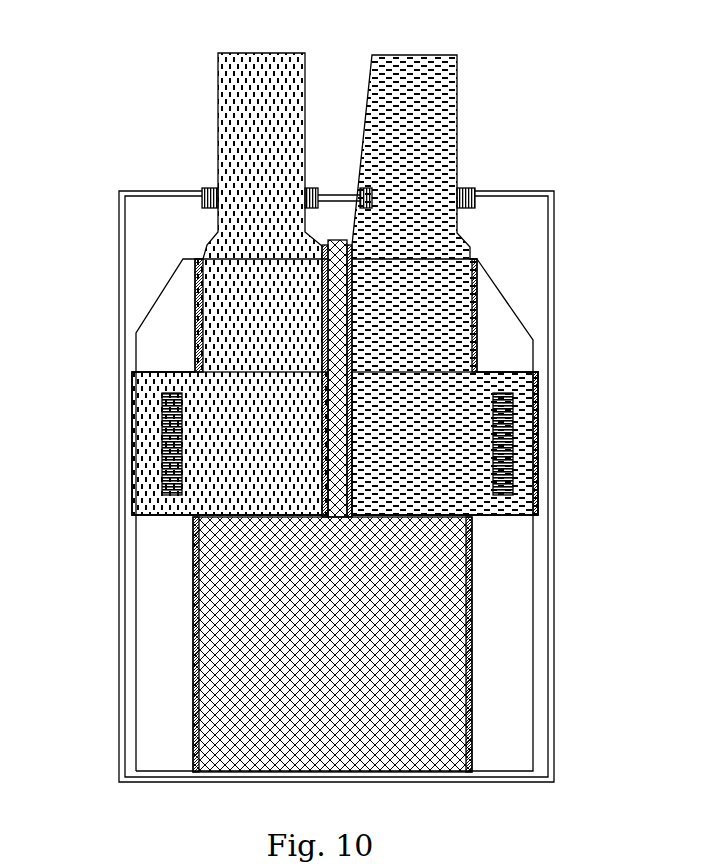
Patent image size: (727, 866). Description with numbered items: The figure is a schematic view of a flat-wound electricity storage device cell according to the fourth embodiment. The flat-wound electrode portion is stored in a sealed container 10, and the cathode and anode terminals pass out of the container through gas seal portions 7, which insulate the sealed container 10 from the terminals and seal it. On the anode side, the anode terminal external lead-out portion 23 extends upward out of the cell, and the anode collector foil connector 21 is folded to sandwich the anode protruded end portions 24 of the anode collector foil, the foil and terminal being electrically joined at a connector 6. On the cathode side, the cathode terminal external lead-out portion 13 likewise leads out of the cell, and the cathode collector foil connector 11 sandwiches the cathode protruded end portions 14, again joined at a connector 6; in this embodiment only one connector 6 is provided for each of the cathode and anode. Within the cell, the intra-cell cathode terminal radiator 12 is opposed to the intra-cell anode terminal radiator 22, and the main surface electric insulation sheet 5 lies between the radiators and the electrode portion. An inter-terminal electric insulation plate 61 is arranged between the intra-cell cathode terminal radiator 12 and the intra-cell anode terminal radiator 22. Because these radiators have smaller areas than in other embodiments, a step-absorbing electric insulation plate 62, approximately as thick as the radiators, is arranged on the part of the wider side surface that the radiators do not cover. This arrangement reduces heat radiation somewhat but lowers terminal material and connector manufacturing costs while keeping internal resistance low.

The main surface electric insulation sheet 5 is at (480, 678).
The connector 6 is at (162, 470).
The gas seal portion 7 is at (203, 190).
The sealed container 10 is at (334, 193).
The cathode collector foil connector 11 is at (528, 408).
The intra-cell cathode terminal radiator 12 is at (400, 455).
The cathode terminal external lead-out portion 13 is at (423, 122).
The cathode protruded end portions 14 is at (495, 330).
The anode collector foil connector 21 is at (143, 412).
The intra-cell anode terminal radiator 22 is at (258, 452).
The anode terminal external lead-out portion 23 is at (252, 118).
The anode protruded end portions 24 is at (180, 292).
The inter-terminal electric insulation plate 61 is at (323, 335).
The step-absorbing electric insulation plate 62 is at (263, 660).